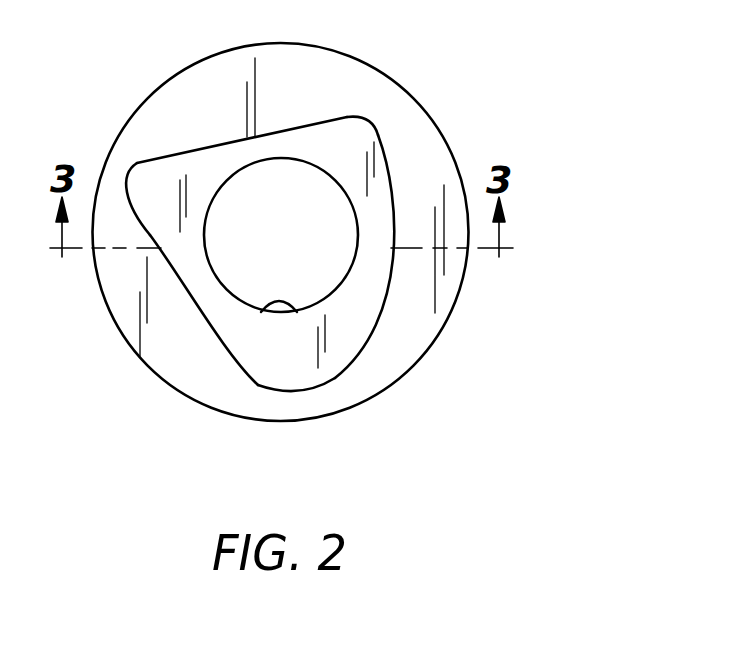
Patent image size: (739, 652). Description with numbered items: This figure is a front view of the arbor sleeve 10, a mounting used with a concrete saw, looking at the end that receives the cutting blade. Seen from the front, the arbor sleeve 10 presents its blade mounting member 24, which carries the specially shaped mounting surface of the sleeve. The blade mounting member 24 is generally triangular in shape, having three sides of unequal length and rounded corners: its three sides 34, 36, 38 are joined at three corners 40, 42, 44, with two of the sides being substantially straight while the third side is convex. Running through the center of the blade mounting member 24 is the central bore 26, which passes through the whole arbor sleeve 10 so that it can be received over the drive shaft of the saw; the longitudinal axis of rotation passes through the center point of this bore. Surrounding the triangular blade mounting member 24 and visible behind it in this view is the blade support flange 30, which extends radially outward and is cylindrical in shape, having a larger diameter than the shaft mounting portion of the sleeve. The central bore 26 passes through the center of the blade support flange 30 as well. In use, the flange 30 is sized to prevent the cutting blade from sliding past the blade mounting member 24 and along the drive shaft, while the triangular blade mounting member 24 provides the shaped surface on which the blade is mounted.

The arbor sleeve 10 is at (340, 252).
The blade mounting member 24 is at (271, 260).
The central bore 26 is at (262, 313).
The blade support flange 30 is at (422, 138).
The side 34 is at (205, 147).
The side 36 is at (197, 288).
The side 38 is at (387, 278).
The corner 40 is at (127, 183).
The corner 42 is at (324, 393).
The corner 44 is at (368, 120).